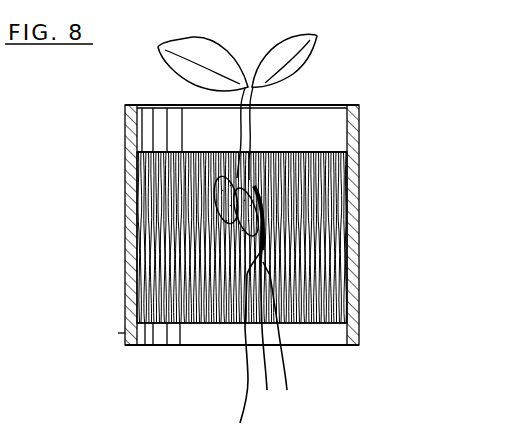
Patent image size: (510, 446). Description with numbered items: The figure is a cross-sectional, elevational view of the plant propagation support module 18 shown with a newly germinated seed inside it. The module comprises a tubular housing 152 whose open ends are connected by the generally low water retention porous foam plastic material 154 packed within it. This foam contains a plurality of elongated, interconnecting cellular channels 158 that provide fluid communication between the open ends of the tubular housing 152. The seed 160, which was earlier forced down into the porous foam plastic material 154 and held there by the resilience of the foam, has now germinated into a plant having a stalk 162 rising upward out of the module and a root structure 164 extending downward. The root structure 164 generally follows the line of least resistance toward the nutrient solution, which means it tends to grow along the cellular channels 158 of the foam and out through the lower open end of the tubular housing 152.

The plant propagation support module 18 is at (108, 316).
The tubular housing 152 is at (355, 210).
The porous foam plastic material 154 is at (301, 149).
The cellular channels 158 is at (334, 242).
The seed 160 is at (222, 230).
The stalk 162 is at (290, 73).
The root structure 164 is at (283, 363).